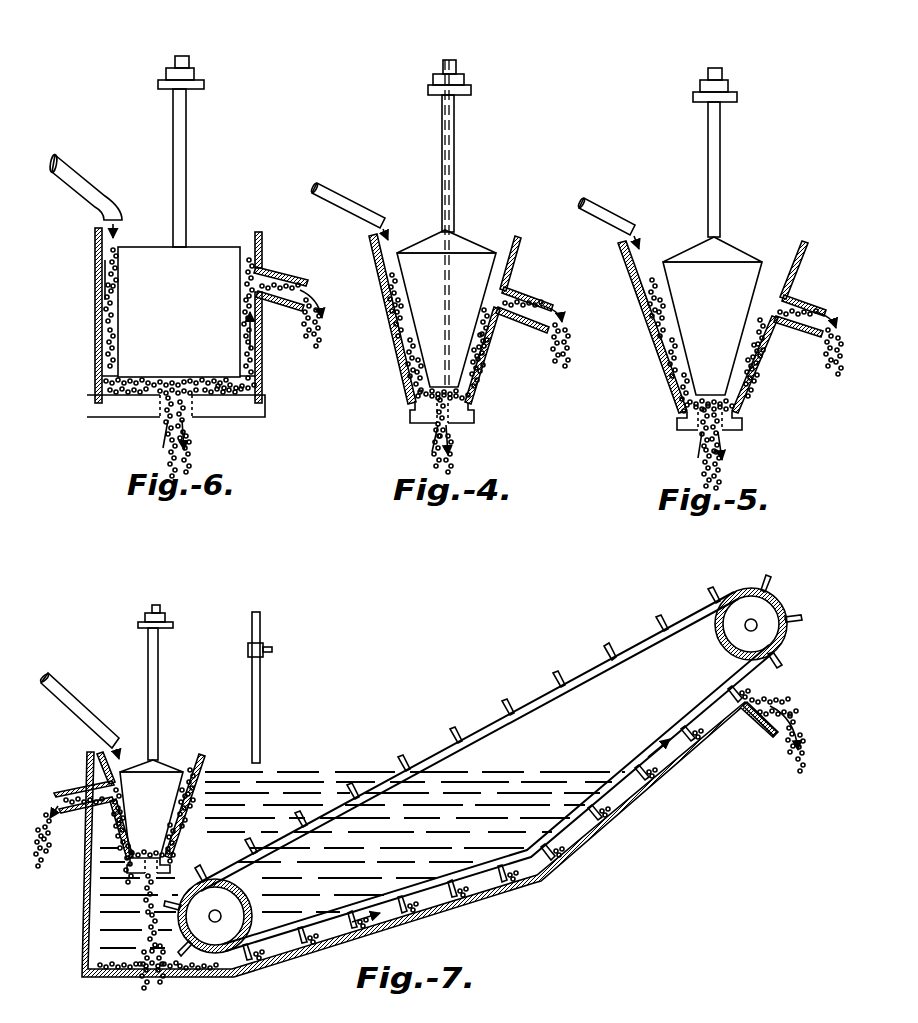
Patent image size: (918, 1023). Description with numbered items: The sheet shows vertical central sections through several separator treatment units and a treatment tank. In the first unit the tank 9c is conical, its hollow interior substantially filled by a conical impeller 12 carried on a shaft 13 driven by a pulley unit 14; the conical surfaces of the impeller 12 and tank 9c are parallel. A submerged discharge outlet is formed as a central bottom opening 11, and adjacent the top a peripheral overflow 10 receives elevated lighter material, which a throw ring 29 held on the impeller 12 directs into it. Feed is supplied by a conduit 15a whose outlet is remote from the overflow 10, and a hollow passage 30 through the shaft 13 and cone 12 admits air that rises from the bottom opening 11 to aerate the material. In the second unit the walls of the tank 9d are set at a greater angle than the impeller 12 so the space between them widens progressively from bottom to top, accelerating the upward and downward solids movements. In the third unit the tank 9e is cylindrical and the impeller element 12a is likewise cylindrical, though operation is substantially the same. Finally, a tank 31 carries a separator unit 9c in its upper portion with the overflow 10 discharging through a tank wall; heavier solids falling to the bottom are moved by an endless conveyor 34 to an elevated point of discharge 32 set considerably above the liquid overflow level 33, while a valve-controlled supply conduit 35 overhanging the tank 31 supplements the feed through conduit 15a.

In FIG. 4, the conical tank 9c is at (400, 353).
In FIG. 7, the conical tank 9c is at (188, 794).
In FIG. 5, the tank 9d is at (665, 353).
In FIG. 6, the cylindrical tank 9e is at (258, 372).
In FIG. 6, the peripheral overflow 10 is at (262, 298).
In FIG. 4, the peripheral overflow 10 is at (500, 318).
In FIG. 5, the peripheral overflow 10 is at (777, 321).
In FIG. 7, the peripheral overflow 10 is at (115, 799).
In FIG. 6, the central bottom opening 11 is at (192, 418).
In FIG. 4, the central bottom opening 11 is at (448, 422).
In FIG. 5, the central bottom opening 11 is at (700, 428).
In FIG. 4, the conical impeller 12 is at (446, 308).
In FIG. 5, the conical impeller 12 is at (712, 316).
In FIG. 7, the conical impeller 12 is at (151, 809).
In FIG. 6, the cylindrical impeller element 12a is at (179, 312).
In FIG. 6, the shaft 13 is at (186, 130).
In FIG. 4, the shaft 13 is at (454, 137).
In FIG. 5, the shaft 13 is at (720, 143).
In FIG. 7, the shaft 13 is at (158, 688).
In FIG. 6, the pulley unit 14 is at (198, 72).
In FIG. 4, the pulley unit 14 is at (465, 80).
In FIG. 5, the pulley unit 14 is at (728, 85).
In FIG. 7, the pulley unit 14 is at (168, 623).
In FIG. 6, the feed conduit 15a is at (80, 176).
In FIG. 4, the feed conduit 15a is at (335, 192).
In FIG. 5, the feed conduit 15a is at (602, 204).
In FIG. 7, the feed conduit 15a is at (73, 690).
In FIG. 4, the throw ring 29 is at (493, 297).
In FIG. 4, the hollow air intake passage 30 is at (450, 60).
In FIG. 7, the treatment tank 31 is at (80, 886).
In FIG. 7, the elevated point of discharge 32 is at (748, 708).
In FIG. 7, the overflow level of liquid 33 is at (515, 781).
In FIG. 7, the endless conveyor 34 is at (296, 925).
In FIG. 7, the valve-controlled supply conduit 35 is at (263, 643).